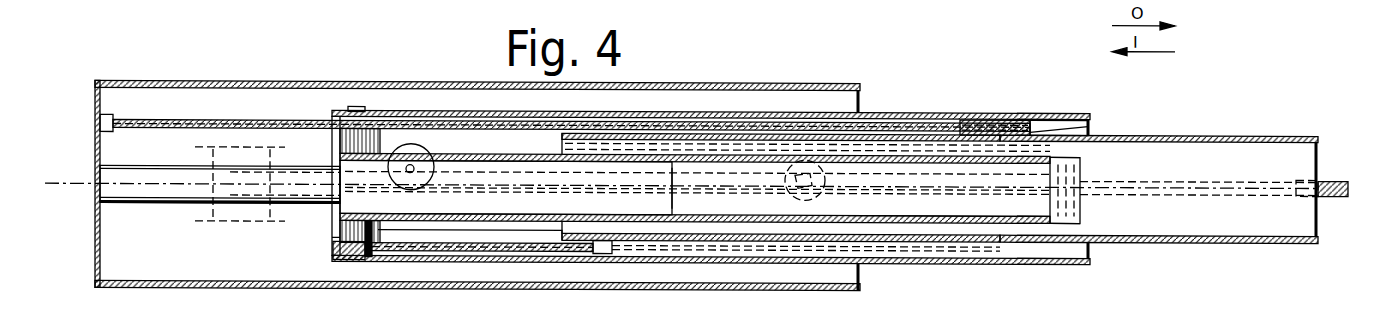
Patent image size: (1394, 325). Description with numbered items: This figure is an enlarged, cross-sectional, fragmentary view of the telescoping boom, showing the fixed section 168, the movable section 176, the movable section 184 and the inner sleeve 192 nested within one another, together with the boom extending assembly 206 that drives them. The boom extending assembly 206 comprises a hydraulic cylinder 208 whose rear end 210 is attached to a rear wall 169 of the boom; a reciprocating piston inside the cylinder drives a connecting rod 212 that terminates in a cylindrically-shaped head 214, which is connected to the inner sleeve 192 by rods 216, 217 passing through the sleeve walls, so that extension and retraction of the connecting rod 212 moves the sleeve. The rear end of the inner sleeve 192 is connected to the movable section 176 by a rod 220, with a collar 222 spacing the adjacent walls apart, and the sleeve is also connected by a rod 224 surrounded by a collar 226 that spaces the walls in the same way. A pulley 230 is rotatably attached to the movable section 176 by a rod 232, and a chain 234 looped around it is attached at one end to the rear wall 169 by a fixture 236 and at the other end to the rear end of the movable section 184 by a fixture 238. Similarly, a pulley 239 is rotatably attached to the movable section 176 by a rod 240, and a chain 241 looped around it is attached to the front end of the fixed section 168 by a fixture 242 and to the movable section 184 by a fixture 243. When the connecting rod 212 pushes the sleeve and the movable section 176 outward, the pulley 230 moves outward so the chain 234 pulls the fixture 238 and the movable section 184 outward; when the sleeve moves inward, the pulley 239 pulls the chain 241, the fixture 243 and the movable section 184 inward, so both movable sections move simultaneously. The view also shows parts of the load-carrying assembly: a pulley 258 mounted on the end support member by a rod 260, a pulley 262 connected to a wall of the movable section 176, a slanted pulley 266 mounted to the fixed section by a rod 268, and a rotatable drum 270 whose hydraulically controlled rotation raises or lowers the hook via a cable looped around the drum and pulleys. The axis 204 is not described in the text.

The fixed section 168 is at (318, 79).
The rear wall 169 is at (95, 98).
The movable section 176 is at (975, 107).
The movable section 184 is at (1265, 131).
The inner sleeve 192 is at (920, 201).
The longitudinal axis 204 is at (60, 182).
The boom extending assembly 206 is at (215, 238).
The hydraulic cylinder 208 is at (320, 204).
The rear end 210 is at (220, 192).
The connecting rod 212 is at (1015, 174).
The cylindrically-shaped head 214 is at (1082, 173).
The rod 216 is at (1080, 217).
The rod 217 is at (1080, 155).
The rod 220 is at (356, 104).
The collar 222 is at (335, 134).
The rod 224 is at (348, 259).
The collar 226 is at (481, 233).
The pulley 230 is at (1085, 123).
The rod 232 is at (1005, 114).
The chain 234 is at (283, 118).
The fixture 236 is at (115, 117).
The fixture 238 is at (535, 133).
The pulley 239 is at (333, 242).
The rod 240 is at (380, 255).
The chain 241 is at (470, 229).
The fixture 242 is at (770, 243).
The fixture 243 is at (600, 252).
The pulley 258 is at (1335, 175).
The rod 260 is at (1318, 187).
The pulley 262 is at (432, 174).
The slanted pulley 266 is at (790, 169).
The rod 268 is at (828, 168).
The rotatable drum 270 is at (200, 209).